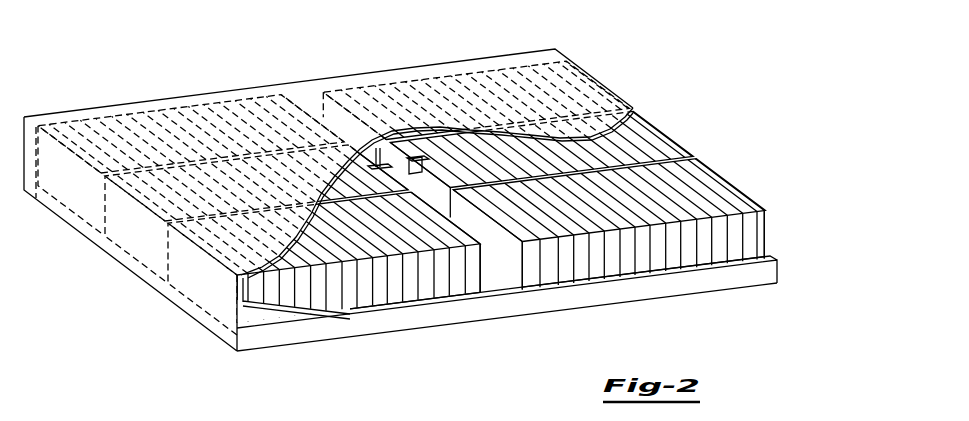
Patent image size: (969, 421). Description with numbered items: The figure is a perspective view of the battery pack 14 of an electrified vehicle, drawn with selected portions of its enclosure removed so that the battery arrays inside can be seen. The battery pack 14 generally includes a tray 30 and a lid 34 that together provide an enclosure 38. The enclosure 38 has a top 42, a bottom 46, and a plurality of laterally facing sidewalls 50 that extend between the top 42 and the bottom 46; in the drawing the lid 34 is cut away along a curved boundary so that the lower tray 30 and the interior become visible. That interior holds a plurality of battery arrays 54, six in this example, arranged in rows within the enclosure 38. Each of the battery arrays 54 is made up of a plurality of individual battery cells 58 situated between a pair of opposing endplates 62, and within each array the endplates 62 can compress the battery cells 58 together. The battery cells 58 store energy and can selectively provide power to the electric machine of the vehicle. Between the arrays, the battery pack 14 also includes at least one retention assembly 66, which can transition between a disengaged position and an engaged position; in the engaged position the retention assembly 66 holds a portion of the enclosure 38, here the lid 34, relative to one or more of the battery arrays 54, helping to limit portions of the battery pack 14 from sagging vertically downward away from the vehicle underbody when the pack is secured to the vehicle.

The battery pack 14 is at (422, 210).
The tray 30 is at (765, 273).
The lid 34 is at (605, 89).
The enclosure 38 is at (670, 288).
The top 42 is at (591, 69).
The bottom 46 is at (358, 343).
The sidewalls 50 is at (258, 348).
The battery arrays 54 is at (457, 284).
The battery cells 58 is at (548, 265).
The endplates 62 is at (245, 288).
The retention assembly 66 is at (412, 152).